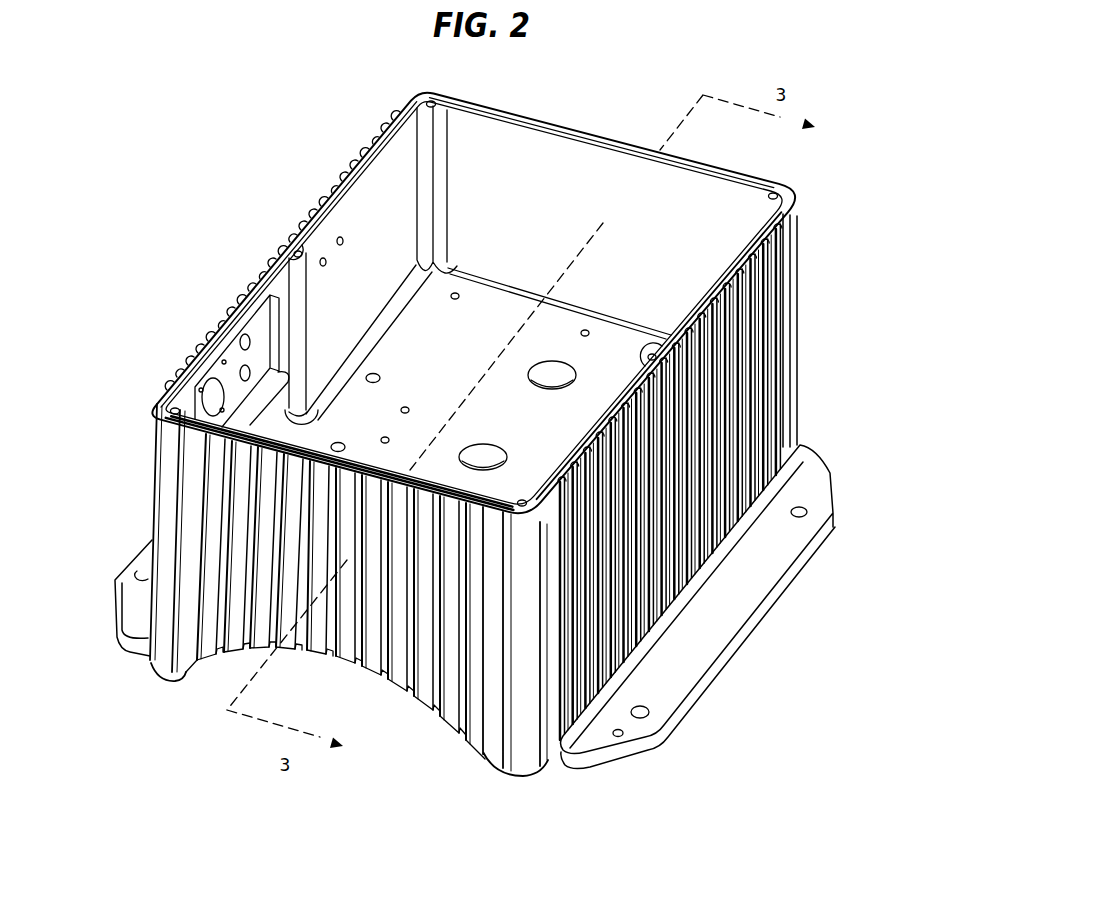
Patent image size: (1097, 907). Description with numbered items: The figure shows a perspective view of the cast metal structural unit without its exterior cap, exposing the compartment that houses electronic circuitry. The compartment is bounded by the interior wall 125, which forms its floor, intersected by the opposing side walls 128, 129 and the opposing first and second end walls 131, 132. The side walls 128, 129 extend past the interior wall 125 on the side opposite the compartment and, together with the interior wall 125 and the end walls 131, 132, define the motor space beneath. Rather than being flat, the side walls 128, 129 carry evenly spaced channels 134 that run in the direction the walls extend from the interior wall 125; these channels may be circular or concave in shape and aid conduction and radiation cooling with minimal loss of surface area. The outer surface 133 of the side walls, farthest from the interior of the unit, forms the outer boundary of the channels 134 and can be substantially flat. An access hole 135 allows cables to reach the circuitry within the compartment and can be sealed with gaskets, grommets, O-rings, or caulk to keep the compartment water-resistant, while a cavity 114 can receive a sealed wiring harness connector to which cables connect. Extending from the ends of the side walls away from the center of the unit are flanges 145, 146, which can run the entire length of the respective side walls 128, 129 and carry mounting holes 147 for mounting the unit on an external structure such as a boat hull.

The cavity 114 is at (257, 323).
The interior wall 125 is at (447, 350).
The side wall 128 is at (222, 305).
The side wall 129 is at (778, 378).
The first end wall 131 is at (420, 640).
The second end wall 132 is at (744, 178).
The outer surface 133 is at (765, 278).
The channels 134 is at (587, 607).
The access hole 135 is at (316, 416).
The flange 145 is at (115, 606).
The flange 146 is at (750, 588).
The mounting holes 147 is at (806, 508).